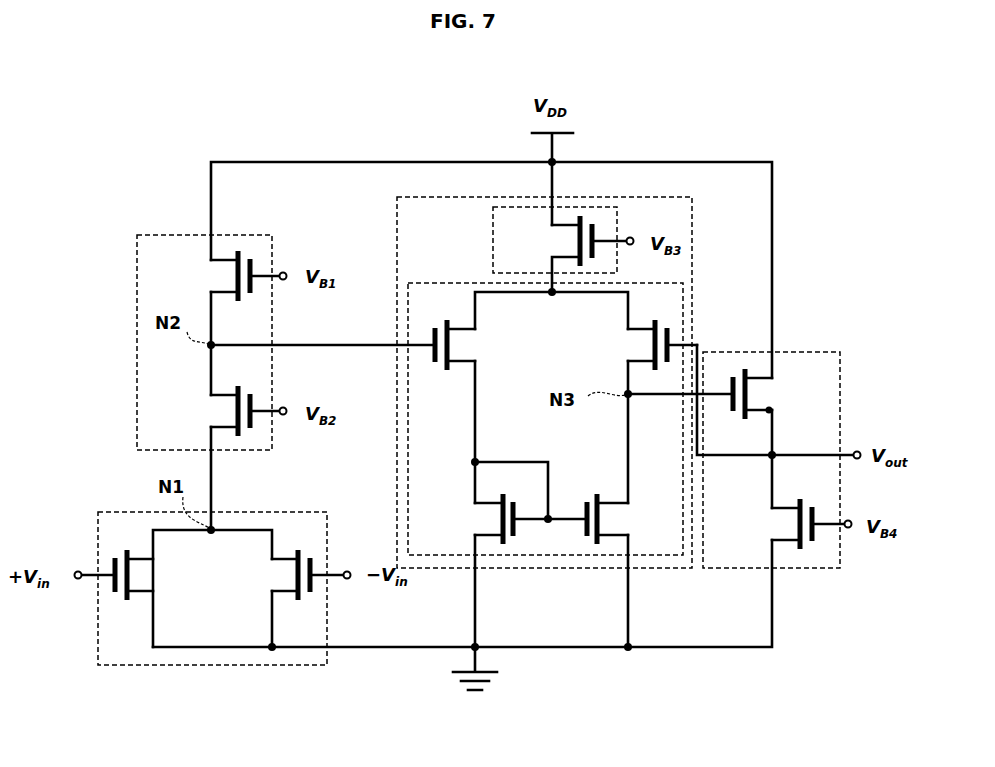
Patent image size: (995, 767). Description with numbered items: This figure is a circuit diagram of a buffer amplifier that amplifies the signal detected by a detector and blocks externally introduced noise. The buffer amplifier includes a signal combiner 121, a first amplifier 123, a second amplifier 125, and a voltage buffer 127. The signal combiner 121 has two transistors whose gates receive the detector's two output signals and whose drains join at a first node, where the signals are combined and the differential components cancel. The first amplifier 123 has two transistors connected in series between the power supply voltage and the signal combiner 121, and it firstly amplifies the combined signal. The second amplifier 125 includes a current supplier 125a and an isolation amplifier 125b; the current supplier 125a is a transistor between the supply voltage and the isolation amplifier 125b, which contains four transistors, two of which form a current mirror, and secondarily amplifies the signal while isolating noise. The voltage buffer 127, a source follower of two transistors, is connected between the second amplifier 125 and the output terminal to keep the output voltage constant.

The signal combiner 121 is at (213, 668).
The first amplifier 123 is at (137, 348).
The second amplifier 125 is at (468, 196).
The current supplier 125a is at (600, 207).
The isolation amplifier 125b is at (468, 283).
The voltage buffer 127 is at (800, 352).